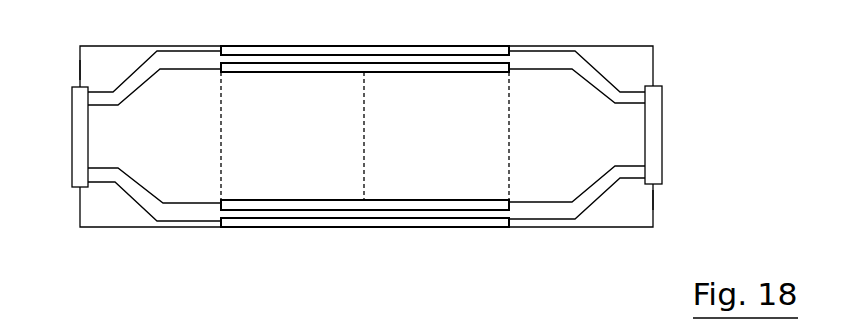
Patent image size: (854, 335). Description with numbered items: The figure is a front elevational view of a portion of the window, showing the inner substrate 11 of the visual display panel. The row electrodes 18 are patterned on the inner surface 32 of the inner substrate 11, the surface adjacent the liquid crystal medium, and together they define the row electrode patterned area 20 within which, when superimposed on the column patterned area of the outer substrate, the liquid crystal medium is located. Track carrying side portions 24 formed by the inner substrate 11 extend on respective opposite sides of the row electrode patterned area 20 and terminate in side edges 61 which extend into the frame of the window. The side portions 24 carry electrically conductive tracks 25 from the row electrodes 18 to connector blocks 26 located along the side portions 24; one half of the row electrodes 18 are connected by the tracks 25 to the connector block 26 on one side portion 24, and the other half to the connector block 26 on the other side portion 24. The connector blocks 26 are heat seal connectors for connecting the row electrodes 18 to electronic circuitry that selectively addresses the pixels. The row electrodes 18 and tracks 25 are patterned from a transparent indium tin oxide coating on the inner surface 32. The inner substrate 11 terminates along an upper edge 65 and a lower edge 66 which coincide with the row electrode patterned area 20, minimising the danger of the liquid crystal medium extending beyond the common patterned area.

The inner substrate 11 is at (400, 183).
The row electrodes 18 is at (333, 47).
The row electrode patterned area 20 is at (509, 113).
The track carrying side portions 24 is at (100, 220).
The electrically conductive tracks 25 is at (125, 82).
The connector blocks 26 is at (76, 135).
The inner surface 32 is at (317, 183).
The side edges 61 is at (80, 73).
The upper edge 65 is at (428, 45).
The lower edge 66 is at (450, 227).